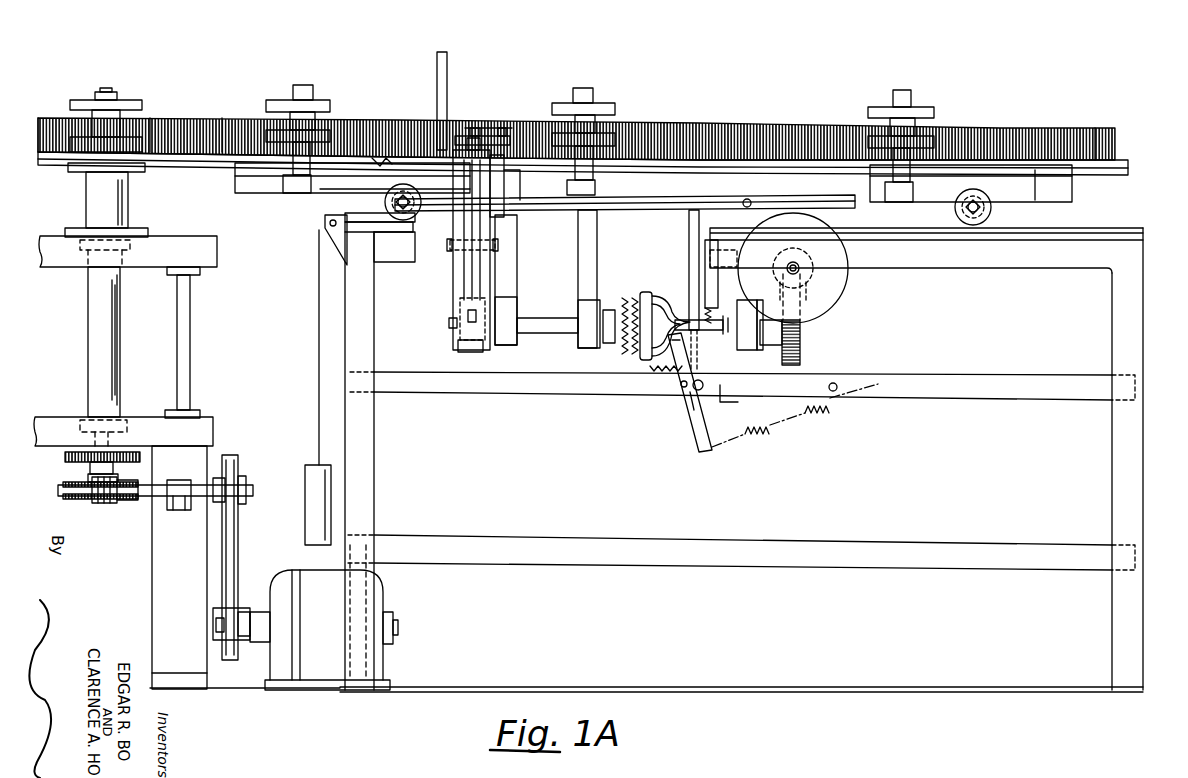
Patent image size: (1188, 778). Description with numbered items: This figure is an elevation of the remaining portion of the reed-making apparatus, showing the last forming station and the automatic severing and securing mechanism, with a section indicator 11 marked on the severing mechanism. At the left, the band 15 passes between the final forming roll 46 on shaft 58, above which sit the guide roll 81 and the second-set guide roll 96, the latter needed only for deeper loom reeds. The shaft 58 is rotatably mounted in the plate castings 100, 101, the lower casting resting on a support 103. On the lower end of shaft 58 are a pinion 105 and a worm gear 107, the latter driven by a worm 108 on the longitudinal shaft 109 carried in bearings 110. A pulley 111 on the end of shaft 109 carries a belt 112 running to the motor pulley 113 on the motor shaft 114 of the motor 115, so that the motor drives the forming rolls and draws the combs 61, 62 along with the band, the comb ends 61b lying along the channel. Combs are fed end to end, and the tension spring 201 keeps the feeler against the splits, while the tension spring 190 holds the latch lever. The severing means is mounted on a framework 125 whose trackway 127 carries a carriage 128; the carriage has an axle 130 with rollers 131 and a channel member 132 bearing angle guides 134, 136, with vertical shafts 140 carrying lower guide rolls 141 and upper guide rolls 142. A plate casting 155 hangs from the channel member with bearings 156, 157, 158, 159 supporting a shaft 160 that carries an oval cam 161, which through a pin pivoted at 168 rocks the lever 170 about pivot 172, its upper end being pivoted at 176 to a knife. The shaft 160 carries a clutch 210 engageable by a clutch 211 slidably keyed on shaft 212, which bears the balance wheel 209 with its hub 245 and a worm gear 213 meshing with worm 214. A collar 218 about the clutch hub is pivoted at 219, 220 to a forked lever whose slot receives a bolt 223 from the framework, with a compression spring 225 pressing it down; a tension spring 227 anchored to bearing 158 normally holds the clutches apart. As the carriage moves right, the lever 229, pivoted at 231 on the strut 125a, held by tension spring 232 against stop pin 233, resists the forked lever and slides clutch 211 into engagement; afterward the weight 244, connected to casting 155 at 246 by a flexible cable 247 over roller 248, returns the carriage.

The section line / slide 11 is at (428, 72).
The band 15 is at (1125, 166).
The forming roll 46 is at (74, 172).
The shaft 58 is at (108, 92).
The comb 61 is at (708, 130).
The rack end 61b is at (350, 124).
The comb 62 is at (224, 122).
The guide roll 81 is at (150, 120).
The guide roll 96 is at (82, 100).
The plate casting 100 is at (128, 327).
The plate casting 101 is at (65, 420).
The support 103 is at (152, 584).
The pinion 105 is at (64, 460).
The worm gear 107 is at (142, 488).
The worm 108 is at (114, 503).
The shaft 109 is at (58, 490).
The bearing 110 is at (180, 510).
The pulley 111 is at (240, 478).
The belt 112 is at (236, 552).
The motor pulley 113 is at (240, 608).
The motor shaft 114 is at (242, 640).
The motor 115 is at (324, 630).
The framework 125 is at (1145, 256).
The longitudinal strut 125a is at (878, 378).
The trackway 127 is at (414, 226).
The carriage 128 is at (888, 204).
The axle 130 is at (385, 203).
The roller 131 is at (414, 196).
The channel member 132 is at (236, 192).
The angle guide 134 is at (240, 172).
The angle guide 136 is at (1035, 172).
The vertical shaft 140 is at (298, 88).
The lower guide roll 141 is at (268, 132).
The upper guide roll 142 is at (274, 102).
The plate casting 155 is at (628, 198).
The bearing 156 is at (517, 274).
The bearing 157 is at (586, 248).
The bearing 158 is at (689, 234).
The bearing 159 is at (750, 350).
The shaft 160 is at (556, 320).
The oval shaped cam 161 is at (484, 350).
The pivot 168 is at (456, 322).
The lever 170 is at (468, 273).
The pivot 172 is at (447, 246).
The pivot 176 is at (498, 184).
The tension spring 190 is at (380, 169).
The tension spring 201 is at (500, 130).
The balance wheel 209 is at (738, 403).
The clutch 210 is at (606, 343).
The clutch 211 is at (632, 354).
The shaft 212 is at (806, 326).
The worm gear 213 is at (802, 350).
The worm 214 is at (800, 288).
The collar 218 is at (640, 300).
The pivot 219 is at (656, 296).
The pivot 220 is at (650, 368).
The bolt 223 is at (704, 330).
The compression spring 225 is at (705, 300).
The tension spring 227 is at (681, 384).
The lever 229 is at (700, 440).
The pivot 231 is at (703, 385).
The tension spring 232 is at (816, 400).
The stop pin 233 is at (690, 400).
The weight 244 is at (305, 496).
The hub 245 is at (800, 264).
The connection 246 is at (848, 282).
The flexible cable 247 is at (318, 314).
The roller 248 is at (324, 222).